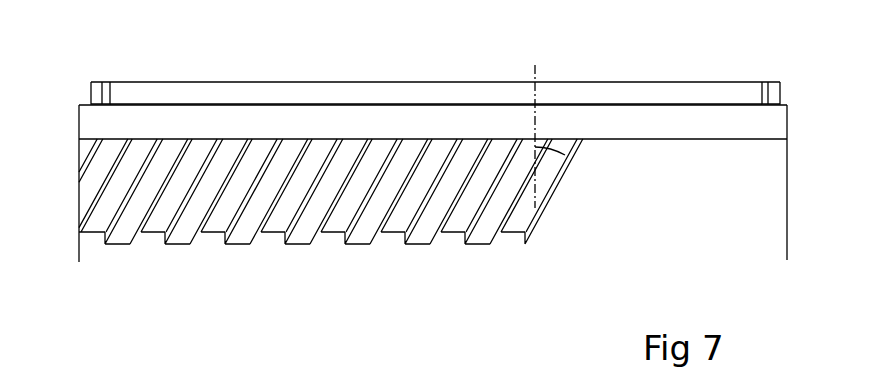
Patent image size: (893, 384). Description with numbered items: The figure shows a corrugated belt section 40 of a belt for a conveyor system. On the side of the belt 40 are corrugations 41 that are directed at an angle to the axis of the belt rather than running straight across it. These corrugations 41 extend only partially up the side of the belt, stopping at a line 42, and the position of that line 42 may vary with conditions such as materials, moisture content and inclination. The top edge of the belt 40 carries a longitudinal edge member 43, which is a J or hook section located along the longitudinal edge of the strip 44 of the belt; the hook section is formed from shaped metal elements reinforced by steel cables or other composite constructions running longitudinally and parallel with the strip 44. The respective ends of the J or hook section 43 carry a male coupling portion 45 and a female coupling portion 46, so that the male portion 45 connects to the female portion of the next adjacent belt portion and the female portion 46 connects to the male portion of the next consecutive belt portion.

The corrugated belt section 40 is at (444, 192).
The corrugations 41 is at (357, 244).
The line 42 is at (772, 130).
The longitudinal edge member 43 is at (466, 82).
The strip 44 is at (98, 178).
The male coupling portion 45 is at (100, 83).
The female coupling portion 46 is at (772, 82).